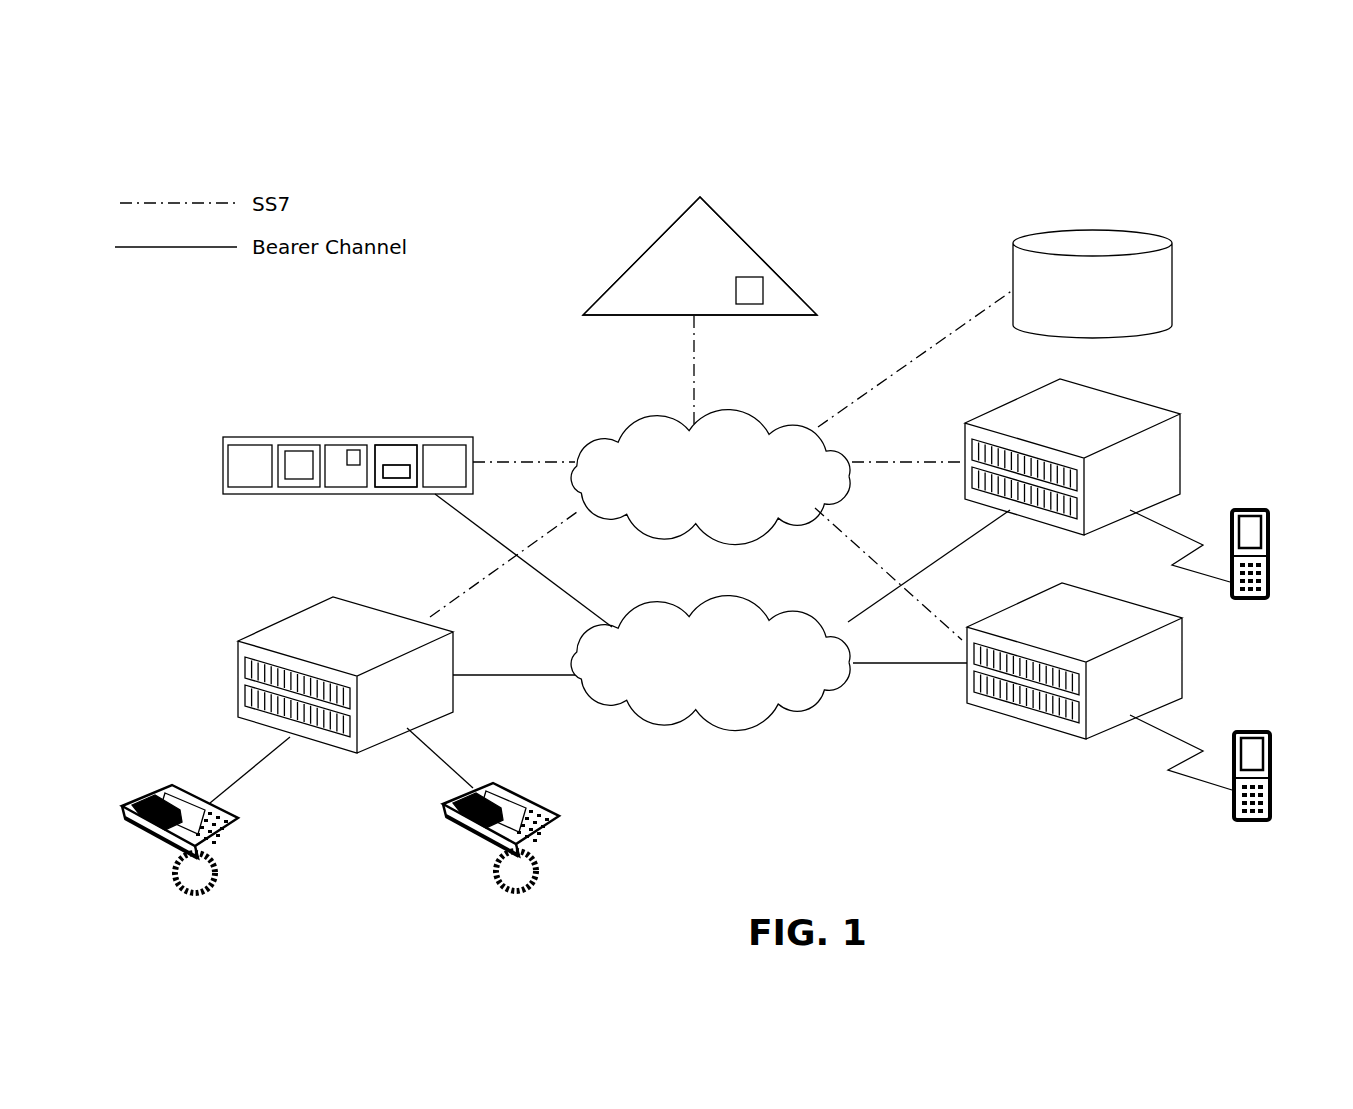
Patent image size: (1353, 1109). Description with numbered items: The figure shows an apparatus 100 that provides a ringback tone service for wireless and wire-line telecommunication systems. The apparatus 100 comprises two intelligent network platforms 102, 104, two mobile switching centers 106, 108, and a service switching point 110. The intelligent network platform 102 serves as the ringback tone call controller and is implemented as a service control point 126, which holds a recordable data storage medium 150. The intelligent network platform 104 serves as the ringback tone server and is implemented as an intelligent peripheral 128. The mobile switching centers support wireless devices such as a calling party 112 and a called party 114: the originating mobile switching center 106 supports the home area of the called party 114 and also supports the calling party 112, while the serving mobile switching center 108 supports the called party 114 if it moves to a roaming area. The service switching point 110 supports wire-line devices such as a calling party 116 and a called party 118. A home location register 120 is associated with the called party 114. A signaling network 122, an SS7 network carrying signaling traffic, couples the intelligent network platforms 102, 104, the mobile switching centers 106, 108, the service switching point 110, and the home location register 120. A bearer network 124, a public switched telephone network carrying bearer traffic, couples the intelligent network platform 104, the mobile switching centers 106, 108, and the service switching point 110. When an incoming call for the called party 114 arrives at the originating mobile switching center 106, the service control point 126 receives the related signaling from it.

The apparatus 100 is at (517, 186).
The intelligent network platform 102 is at (817, 251).
The intelligent network platform 104 is at (290, 407).
The originating mobile switching center 106 is at (1182, 441).
The serving mobile switching center 108 is at (1030, 720).
The service switching point 110 is at (268, 625).
The calling party 112 is at (1272, 553).
The called party 114 is at (1274, 783).
The calling party 116 is at (233, 832).
The called party 118 is at (477, 835).
The home location register 120 is at (1172, 285).
The signaling network 122 is at (610, 438).
The bearer network 124 is at (740, 713).
The service control point 126 is at (635, 262).
The intelligent peripheral 128 is at (397, 437).
The recordable data storage medium 150 is at (750, 304).